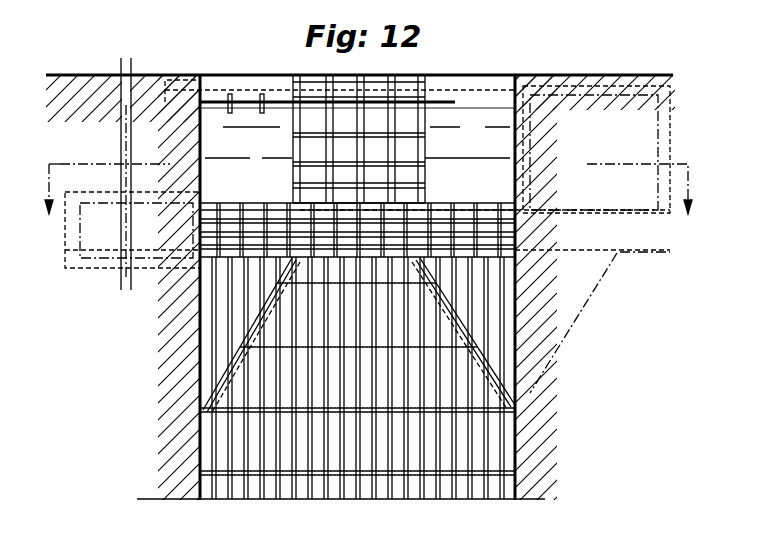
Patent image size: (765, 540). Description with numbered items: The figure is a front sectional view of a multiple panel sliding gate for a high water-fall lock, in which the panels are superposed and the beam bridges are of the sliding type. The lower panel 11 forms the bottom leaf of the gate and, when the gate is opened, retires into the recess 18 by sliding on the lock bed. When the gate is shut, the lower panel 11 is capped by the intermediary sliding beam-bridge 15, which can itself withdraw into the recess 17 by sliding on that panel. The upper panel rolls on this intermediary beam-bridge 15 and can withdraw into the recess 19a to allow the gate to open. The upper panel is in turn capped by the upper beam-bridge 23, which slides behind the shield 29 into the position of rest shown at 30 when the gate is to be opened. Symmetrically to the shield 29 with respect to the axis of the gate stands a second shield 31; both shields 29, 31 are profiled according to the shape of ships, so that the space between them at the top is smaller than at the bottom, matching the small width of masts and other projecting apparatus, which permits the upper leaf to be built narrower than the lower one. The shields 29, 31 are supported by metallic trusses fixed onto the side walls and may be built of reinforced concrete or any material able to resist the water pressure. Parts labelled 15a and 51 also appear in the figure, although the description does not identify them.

The lower panel 11 is at (238, 447).
The intermediary sliding beam-bridge 15 is at (465, 240).
The upper beam 15a is at (420, 175).
The recess 17 is at (105, 242).
The recess 18 is at (570, 412).
The recess 19a is at (626, 170).
The upper beam-bridge 23 is at (392, 87).
The shield 29 is at (263, 188).
The position of rest 30 is at (238, 82).
The second shield 31 is at (500, 328).
The support member 51 is at (465, 199).